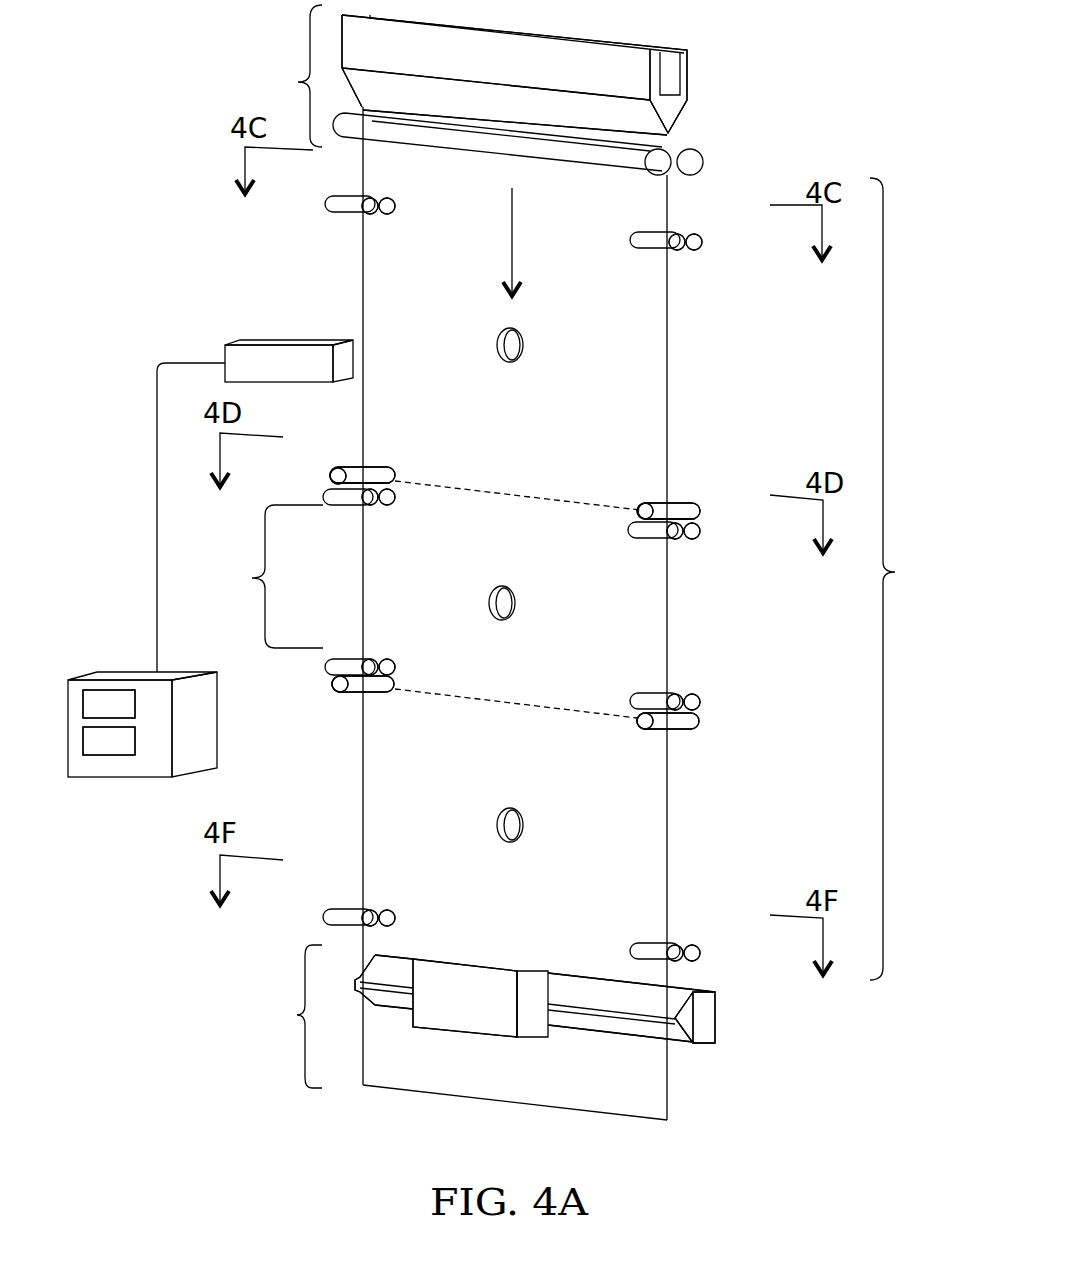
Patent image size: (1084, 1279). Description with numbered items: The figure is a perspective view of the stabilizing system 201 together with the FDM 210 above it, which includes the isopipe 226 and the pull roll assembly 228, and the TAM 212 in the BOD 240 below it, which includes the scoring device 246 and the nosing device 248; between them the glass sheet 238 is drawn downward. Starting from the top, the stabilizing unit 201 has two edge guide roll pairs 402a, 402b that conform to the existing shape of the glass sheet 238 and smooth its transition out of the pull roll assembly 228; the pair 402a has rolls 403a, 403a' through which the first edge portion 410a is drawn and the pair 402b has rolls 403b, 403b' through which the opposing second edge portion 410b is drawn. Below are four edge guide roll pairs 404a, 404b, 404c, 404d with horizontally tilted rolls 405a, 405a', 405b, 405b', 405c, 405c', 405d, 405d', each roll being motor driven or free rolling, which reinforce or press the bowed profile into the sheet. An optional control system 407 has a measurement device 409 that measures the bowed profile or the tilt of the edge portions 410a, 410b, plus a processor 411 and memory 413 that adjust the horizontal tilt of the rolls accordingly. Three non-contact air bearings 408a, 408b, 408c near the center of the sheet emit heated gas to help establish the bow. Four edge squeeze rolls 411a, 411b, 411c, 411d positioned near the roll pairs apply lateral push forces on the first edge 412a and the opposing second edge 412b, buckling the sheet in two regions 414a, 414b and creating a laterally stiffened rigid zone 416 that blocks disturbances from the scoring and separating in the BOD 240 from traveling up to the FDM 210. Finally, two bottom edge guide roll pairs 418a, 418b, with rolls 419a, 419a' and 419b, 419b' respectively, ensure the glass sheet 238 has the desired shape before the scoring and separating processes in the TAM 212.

The stabilizing system 201 is at (904, 579).
The FDM 210 is at (474, 76).
The TAM 212 is at (747, 1024).
The isopipe 226 is at (690, 58).
The pull roll assembly 228 is at (693, 149).
The glass sheet 238 is at (652, 290).
The BOD 240 is at (485, 1016).
The scoring device 246 is at (458, 1037).
The nosing device 248 is at (690, 1045).
The edge guide roll pair 402a is at (350, 181).
The edge guide roll pair 402b is at (690, 218).
The roll 403a is at (332, 219).
The roll 403a' is at (337, 232).
The roll 403b is at (712, 269).
The roll 403b' is at (724, 256).
The edge guide roll pair 404a is at (316, 480).
The edge guide roll pair 404b is at (715, 526).
The edge guide roll pair 404c is at (313, 680).
The edge guide roll pair 404d is at (715, 712).
The horizontally tilted roll 405a is at (332, 513).
The horizontally tilted roll 405a' is at (337, 525).
The horizontally tilted roll 405b is at (712, 559).
The horizontally tilted roll 405b' is at (724, 546).
The horizontally tilted roll 405c is at (332, 647).
The horizontally tilted roll 405c' is at (337, 634).
The horizontally tilted roll 405d is at (712, 677).
The horizontally tilted roll 405d' is at (724, 691).
The control system 407 is at (143, 672).
The non-contact air bearing 408a is at (520, 358).
The non-contact air bearing 408b is at (513, 617).
The non-contact air bearing 408c is at (520, 838).
The measurement device 409 is at (250, 343).
The first edge portion 410a is at (378, 433).
The second edge portion 410b is at (650, 467).
The processor 411 is at (109, 704).
The edge squeeze roll 411a is at (352, 467).
The edge squeeze roll 411b is at (680, 503).
The edge squeeze roll 411c is at (352, 693).
The edge squeeze roll 411d is at (683, 728).
The first edge 412a is at (362, 465).
The second edge 412b is at (670, 500).
The memory 413 is at (109, 741).
The buckled region 414a is at (498, 489).
The buckled region 414b is at (497, 697).
The rigid zone 416 is at (269, 576).
The bottom edge guide roll pair 418a is at (305, 919).
The bottom edge guide roll pair 418b is at (727, 959).
The roll 419a is at (335, 897).
The roll 419a' is at (339, 885).
The roll 419b is at (712, 970).
The roll 419b' is at (723, 941).